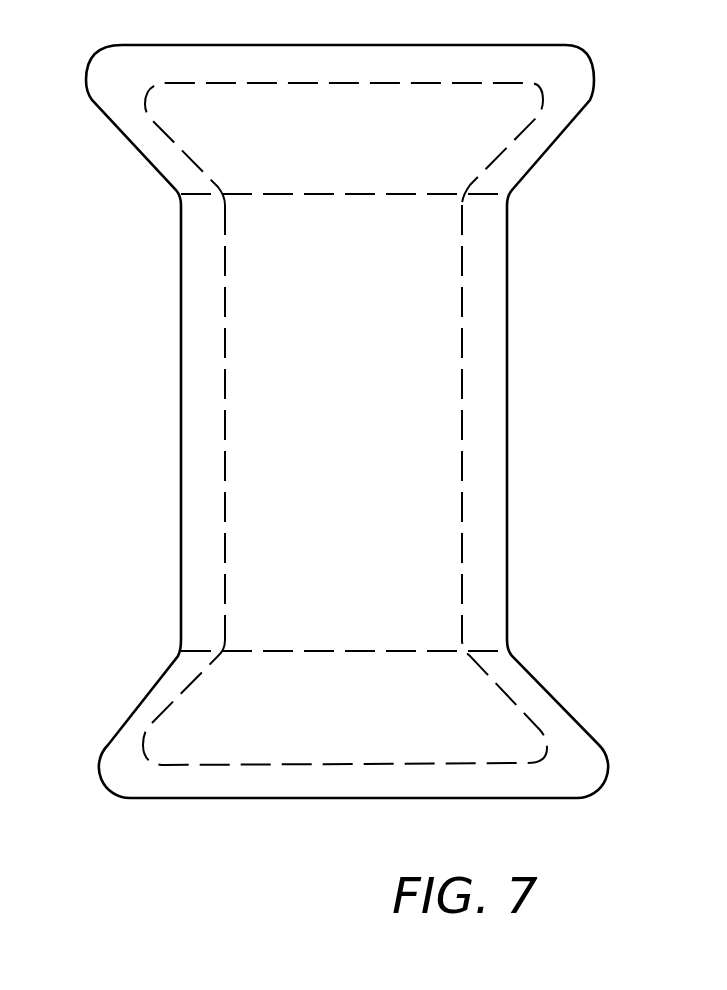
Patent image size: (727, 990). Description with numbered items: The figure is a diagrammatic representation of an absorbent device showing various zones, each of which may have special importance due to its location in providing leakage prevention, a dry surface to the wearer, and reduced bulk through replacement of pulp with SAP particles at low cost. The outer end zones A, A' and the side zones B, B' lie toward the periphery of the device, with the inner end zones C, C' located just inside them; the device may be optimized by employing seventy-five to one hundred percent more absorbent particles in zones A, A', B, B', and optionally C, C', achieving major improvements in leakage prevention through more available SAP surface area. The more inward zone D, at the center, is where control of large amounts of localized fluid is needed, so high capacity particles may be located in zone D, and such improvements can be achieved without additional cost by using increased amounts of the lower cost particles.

The zone A' is at (340, 108).
The zone A is at (353, 753).
The zone B is at (163, 422).
The zone B' is at (536, 422).
The zone C' is at (344, 144).
The zone C is at (345, 702).
The zone D is at (345, 390).